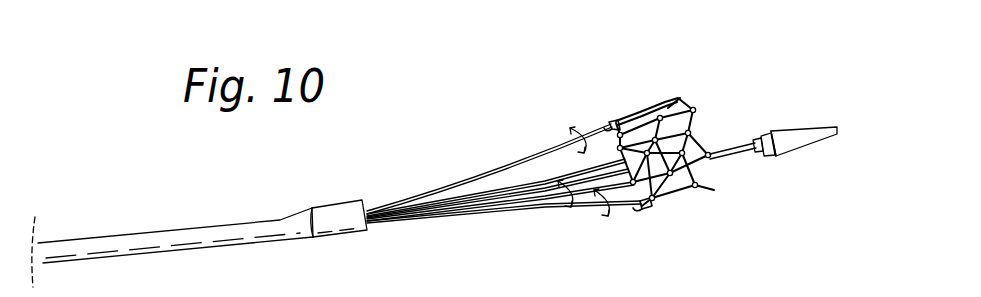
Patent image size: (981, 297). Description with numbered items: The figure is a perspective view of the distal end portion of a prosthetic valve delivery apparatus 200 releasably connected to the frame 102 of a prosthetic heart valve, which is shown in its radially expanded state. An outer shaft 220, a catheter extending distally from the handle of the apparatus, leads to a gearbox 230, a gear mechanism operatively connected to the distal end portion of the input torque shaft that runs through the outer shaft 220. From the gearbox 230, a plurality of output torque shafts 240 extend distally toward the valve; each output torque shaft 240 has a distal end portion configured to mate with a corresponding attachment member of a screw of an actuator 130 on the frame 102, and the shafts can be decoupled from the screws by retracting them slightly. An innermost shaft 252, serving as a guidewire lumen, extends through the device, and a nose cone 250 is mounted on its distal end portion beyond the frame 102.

The prosthetic valve delivery apparatus 200 is at (416, 128).
The outer shaft 220 is at (100, 242).
The gearbox 230 is at (337, 203).
The output torque shafts 240 is at (473, 180).
The actuator 130 is at (615, 122).
The frame 102 is at (690, 107).
The innermost shaft 252 is at (728, 148).
The nose cone 250 is at (785, 135).